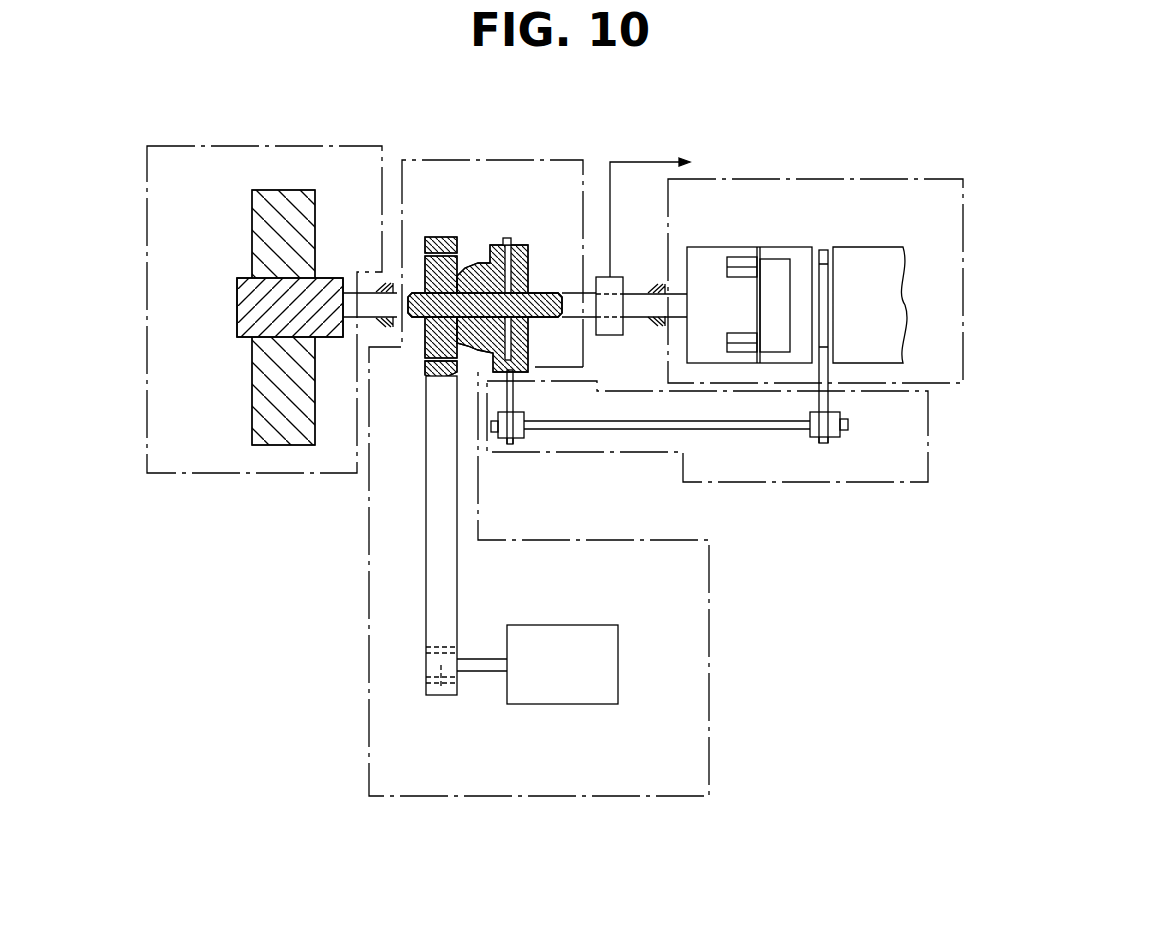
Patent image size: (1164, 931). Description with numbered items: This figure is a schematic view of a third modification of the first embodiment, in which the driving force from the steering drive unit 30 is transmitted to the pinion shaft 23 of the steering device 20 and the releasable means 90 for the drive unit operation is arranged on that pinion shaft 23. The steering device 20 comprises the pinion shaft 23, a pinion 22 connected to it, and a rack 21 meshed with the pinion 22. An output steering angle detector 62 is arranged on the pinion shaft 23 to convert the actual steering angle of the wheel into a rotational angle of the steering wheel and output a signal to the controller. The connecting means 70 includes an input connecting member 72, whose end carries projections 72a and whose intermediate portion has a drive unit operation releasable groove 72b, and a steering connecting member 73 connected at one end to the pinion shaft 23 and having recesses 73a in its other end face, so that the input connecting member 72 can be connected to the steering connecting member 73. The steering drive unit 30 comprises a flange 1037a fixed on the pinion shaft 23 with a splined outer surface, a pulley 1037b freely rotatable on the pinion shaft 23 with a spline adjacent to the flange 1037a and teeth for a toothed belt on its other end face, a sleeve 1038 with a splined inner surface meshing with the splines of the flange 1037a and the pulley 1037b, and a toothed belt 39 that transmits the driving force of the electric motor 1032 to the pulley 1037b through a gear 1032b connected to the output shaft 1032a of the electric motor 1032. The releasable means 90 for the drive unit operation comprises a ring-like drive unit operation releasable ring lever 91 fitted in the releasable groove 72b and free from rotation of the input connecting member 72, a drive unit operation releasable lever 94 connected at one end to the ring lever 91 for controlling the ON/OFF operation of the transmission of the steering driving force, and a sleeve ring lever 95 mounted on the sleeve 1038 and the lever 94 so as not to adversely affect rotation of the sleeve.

The steering device 20 is at (148, 147).
The rack 21 is at (252, 211).
The pinion 22 is at (237, 308).
The pinion shaft 23 is at (349, 293).
The steering drive unit 30 is at (571, 160).
The toothed belt 39 is at (428, 486).
The output steering angle detector 62 is at (616, 283).
The connecting means 70 is at (942, 178).
The input connecting member 72 is at (888, 252).
The projections 72a is at (777, 262).
The drive unit operation releasable groove 72b is at (825, 250).
The steering connecting member 73 is at (701, 247).
The recesses 73a is at (742, 262).
The drive unit operation releasable means 90 is at (928, 474).
The drive unit operation releasable ring lever 91 is at (828, 403).
The drive unit operation releasable lever 94 is at (736, 432).
The sleeve ring lever 95 is at (514, 406).
The electric motor 1032 is at (588, 625).
The output shaft 1032a is at (486, 673).
The gear 1032b is at (442, 690).
The flange 1037a is at (530, 280).
The pulley 1037b is at (432, 238).
The sleeve 1038 is at (508, 238).